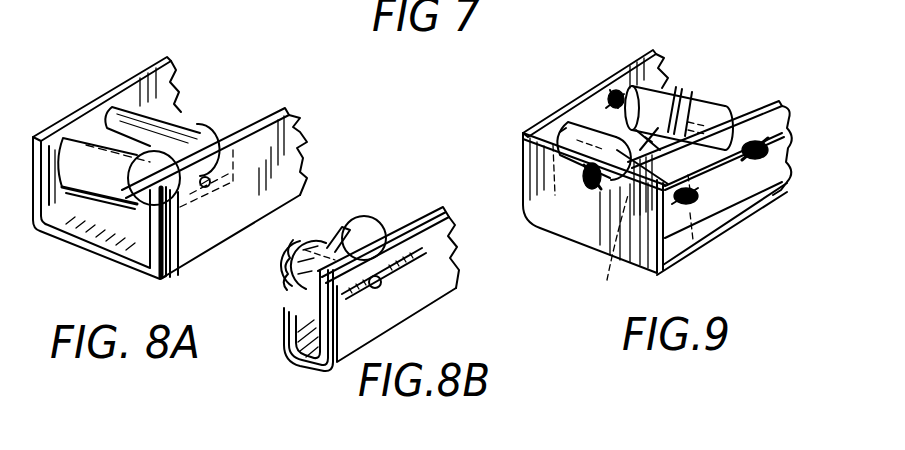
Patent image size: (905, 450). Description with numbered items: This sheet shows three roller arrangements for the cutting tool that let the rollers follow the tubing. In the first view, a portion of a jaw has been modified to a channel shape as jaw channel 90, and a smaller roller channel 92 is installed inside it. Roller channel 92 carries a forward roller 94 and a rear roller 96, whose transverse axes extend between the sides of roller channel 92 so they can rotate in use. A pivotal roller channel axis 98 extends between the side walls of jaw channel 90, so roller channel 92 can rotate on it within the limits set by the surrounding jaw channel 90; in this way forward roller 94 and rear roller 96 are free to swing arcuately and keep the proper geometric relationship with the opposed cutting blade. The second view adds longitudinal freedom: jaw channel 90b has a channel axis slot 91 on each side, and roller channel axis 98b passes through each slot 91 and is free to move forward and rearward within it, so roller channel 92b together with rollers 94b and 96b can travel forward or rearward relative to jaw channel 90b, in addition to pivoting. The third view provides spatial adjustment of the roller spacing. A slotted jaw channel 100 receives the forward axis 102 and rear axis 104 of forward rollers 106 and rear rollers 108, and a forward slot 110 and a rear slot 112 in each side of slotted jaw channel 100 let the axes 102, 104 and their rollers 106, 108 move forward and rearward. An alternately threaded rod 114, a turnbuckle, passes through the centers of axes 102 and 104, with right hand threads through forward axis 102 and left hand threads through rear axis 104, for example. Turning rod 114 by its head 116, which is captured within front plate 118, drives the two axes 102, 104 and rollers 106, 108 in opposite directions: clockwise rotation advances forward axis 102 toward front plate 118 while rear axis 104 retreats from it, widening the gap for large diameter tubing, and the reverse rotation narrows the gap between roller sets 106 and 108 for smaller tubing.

In FIG. 8A, the jaw channel 90 is at (303, 118).
In FIG. 8B, the channel axis slot 91 is at (418, 220).
In FIG. 8A, the roller channel 92 is at (127, 225).
In FIG. 8A, the forward roller 94 is at (92, 140).
In FIG. 8A, the rear roller 96 is at (178, 113).
In FIG. 8A, the pivotal roller channel axis 98 is at (211, 182).
In FIG. 8B, the jaw channel 90b is at (437, 298).
In FIG. 8B, the roller channel 92b is at (287, 318).
In FIG. 8B, the forward roller 94b is at (285, 260).
In FIG. 8B, the rear roller 96b is at (370, 215).
In FIG. 8B, the roller channel axis 98b is at (380, 296).
In FIG. 9, the slotted jaw channel 100 is at (697, 248).
In FIG. 9, the forward axis 102 is at (687, 207).
In FIG. 9, the rear axis 104 is at (780, 120).
In FIG. 9, the forward rollers 106 is at (617, 255).
In FIG. 9, the rear rollers 108 is at (738, 88).
In FIG. 9, the forward slot 110 is at (563, 135).
In FIG. 9, the rear slot 112 is at (613, 105).
In FIG. 9, the alternately threaded rod 114 is at (680, 84).
In FIG. 9, the head 116 is at (582, 165).
In FIG. 9, the front plate 118 is at (570, 232).